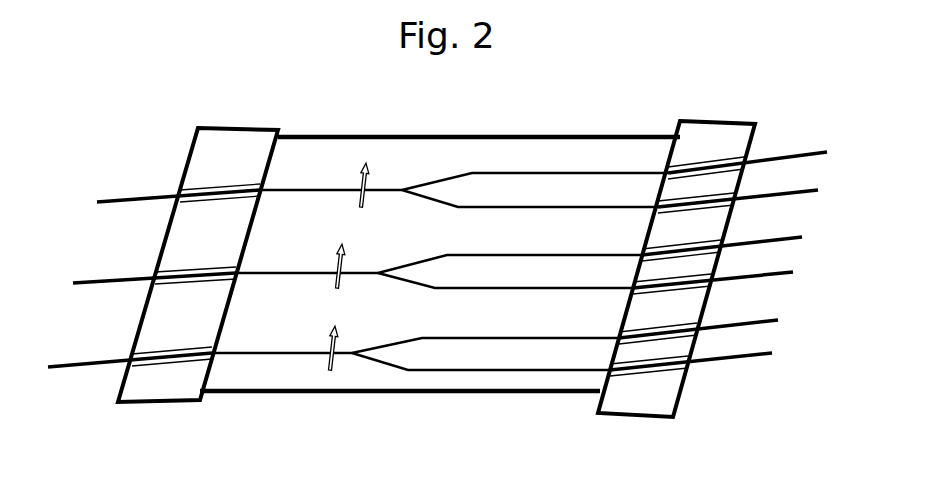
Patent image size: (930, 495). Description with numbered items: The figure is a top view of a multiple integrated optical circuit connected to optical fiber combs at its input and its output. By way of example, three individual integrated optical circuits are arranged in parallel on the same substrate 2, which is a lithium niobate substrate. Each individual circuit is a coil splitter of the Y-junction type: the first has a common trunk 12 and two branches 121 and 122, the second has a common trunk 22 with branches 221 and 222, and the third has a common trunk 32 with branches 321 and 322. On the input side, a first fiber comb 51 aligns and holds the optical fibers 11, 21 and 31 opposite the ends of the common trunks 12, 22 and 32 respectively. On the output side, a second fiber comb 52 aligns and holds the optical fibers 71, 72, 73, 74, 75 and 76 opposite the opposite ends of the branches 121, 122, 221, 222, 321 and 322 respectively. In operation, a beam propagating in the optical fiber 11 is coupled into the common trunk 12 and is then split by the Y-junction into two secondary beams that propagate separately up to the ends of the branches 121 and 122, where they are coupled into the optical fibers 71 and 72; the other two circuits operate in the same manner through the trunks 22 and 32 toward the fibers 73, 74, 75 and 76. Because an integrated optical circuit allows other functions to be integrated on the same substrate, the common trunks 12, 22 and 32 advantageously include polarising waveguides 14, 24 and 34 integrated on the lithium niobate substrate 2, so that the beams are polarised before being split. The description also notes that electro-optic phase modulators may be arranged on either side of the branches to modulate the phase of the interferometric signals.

The substrate 2 is at (407, 395).
The optical fiber 11 is at (173, 197).
The common trunk 12 is at (340, 188).
The polarising waveguide 14 is at (368, 187).
The optical fiber 21 is at (127, 275).
The common trunk 22 is at (320, 270).
The polarising waveguide 24 is at (347, 266).
The optical fiber 31 is at (108, 357).
The common trunk 32 is at (293, 350).
The polarising waveguide 34 is at (348, 352).
The first fiber comb 51 is at (157, 402).
The second fiber comb 52 is at (605, 418).
The optical fiber 71 is at (765, 157).
The optical fiber 72 is at (780, 197).
The optical fiber 73 is at (777, 237).
The optical fiber 74 is at (753, 278).
The optical fiber 75 is at (740, 327).
The optical fiber 76 is at (713, 363).
The branch 121 is at (572, 173).
The branch 122 is at (525, 208).
The branch 221 is at (548, 255).
The branch 222 is at (500, 290).
The branch 321 is at (523, 336).
The branch 322 is at (455, 372).